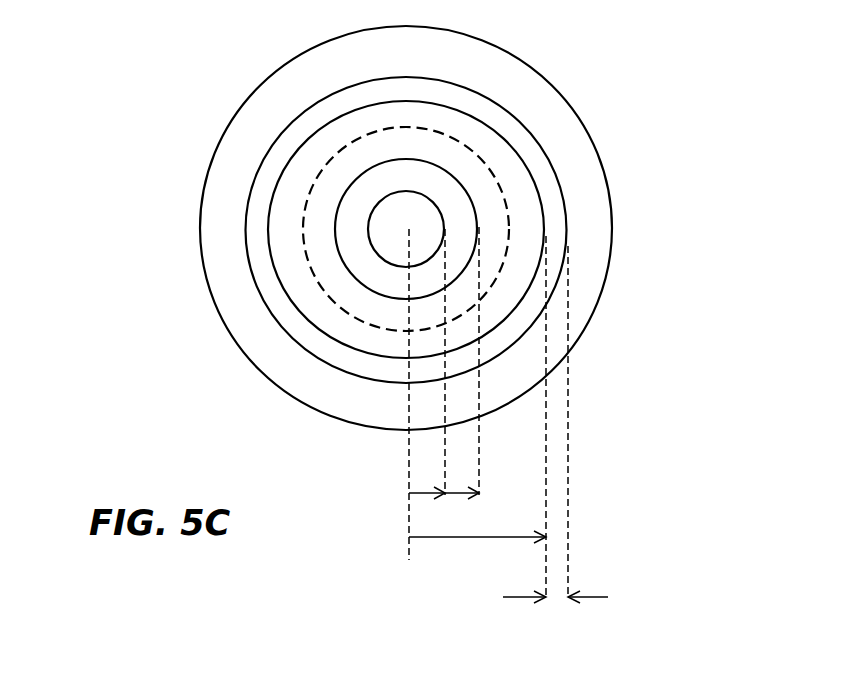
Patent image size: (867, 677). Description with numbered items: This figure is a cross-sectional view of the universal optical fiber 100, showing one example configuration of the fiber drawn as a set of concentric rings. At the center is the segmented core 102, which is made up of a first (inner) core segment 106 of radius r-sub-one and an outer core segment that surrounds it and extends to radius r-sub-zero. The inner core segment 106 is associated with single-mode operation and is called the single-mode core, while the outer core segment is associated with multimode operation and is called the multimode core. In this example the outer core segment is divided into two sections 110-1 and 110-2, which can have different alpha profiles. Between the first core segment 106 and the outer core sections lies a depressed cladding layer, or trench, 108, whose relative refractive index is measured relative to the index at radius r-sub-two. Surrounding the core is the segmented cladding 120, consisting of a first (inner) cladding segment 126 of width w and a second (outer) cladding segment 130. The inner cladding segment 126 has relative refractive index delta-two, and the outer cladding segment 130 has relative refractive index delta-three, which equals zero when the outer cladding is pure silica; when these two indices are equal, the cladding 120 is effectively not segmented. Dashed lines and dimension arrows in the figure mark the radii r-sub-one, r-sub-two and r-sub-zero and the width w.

The fiber 100 is at (215, 80).
The segmented core 102 is at (665, 3).
The first (inner) core segment 106 is at (415, 218).
The depressed cladding layer (trench) 108 is at (450, 200).
The first section of outer core segment 110-1 is at (483, 188).
The second section of outer core segment 110-2 is at (518, 185).
The segmented cladding 120 is at (723, 193).
The first (inner) cladding segment 126 is at (560, 238).
The second (outer) cladding segment 130 is at (585, 262).